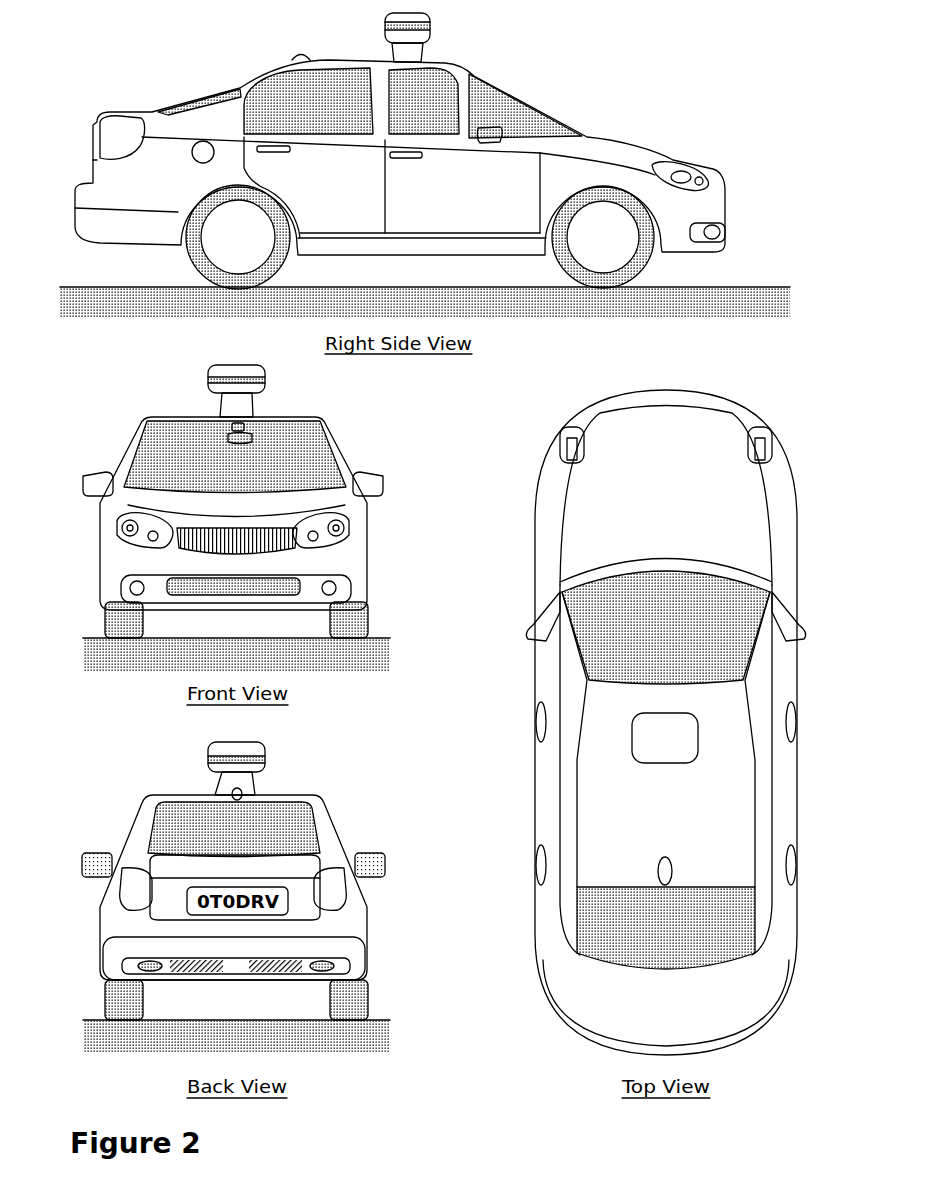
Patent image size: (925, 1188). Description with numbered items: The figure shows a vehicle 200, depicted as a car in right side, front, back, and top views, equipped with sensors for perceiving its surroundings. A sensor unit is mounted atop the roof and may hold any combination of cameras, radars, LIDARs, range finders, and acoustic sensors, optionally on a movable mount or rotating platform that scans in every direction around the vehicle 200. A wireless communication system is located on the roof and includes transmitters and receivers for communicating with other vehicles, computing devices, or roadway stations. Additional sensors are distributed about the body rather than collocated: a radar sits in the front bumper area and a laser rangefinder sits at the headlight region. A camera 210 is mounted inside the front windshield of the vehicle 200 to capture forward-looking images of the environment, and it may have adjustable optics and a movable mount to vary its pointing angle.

The vehicle 200 is at (68, 100).
The camera 210 is at (246, 428).